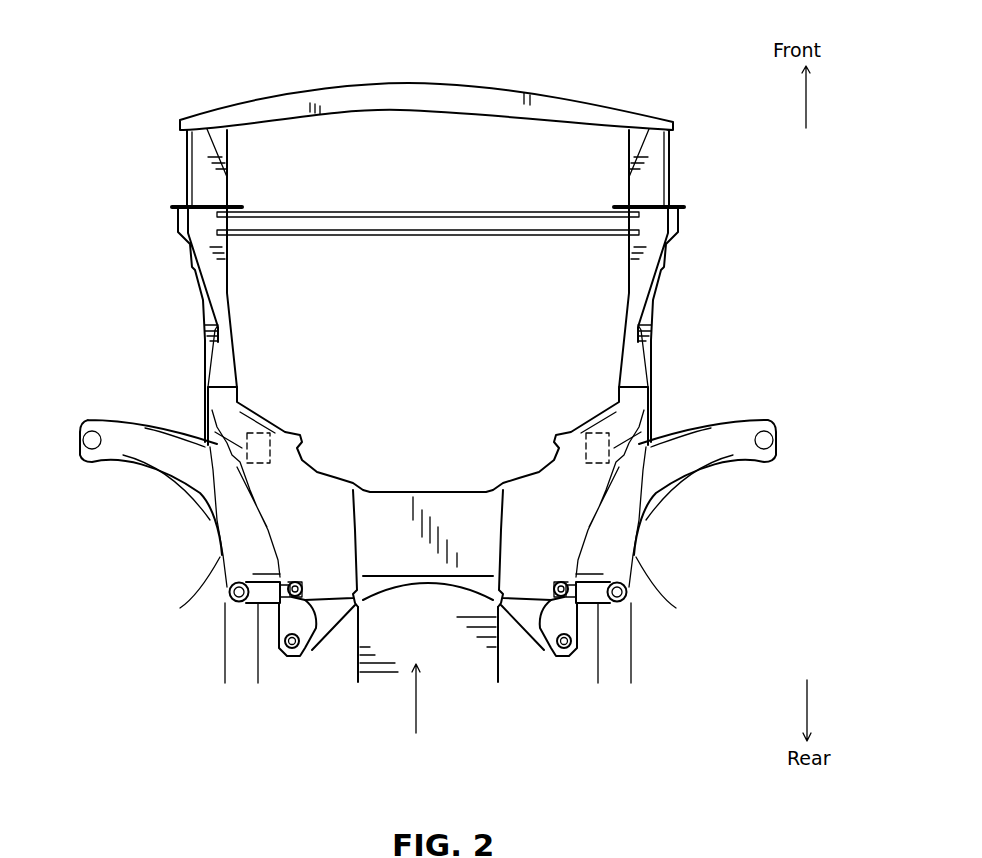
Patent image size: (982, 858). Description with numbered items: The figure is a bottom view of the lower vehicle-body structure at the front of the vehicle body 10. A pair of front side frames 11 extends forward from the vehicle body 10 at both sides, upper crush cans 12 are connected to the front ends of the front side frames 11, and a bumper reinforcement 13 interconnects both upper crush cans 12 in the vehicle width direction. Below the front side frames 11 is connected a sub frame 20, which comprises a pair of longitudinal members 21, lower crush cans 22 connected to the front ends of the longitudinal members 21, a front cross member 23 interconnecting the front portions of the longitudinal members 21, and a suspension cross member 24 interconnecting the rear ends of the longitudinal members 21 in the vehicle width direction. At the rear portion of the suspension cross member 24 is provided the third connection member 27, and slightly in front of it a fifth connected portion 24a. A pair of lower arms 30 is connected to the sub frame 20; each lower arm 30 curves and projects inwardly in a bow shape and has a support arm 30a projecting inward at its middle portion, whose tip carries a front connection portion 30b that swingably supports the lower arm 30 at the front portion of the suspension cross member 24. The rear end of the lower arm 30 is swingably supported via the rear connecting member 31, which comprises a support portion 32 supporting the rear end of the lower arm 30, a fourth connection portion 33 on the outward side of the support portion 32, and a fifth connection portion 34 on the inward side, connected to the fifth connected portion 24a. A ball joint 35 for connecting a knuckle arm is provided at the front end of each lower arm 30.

The vehicle body 10 is at (428, 684).
The front side frame 11 is at (180, 264).
The upper crush can 12 is at (185, 150).
The bumper reinforcement 13 is at (610, 113).
The sub frame 20 is at (244, 342).
The longitudinal member 21 is at (213, 293).
The lower crush can 22 is at (193, 165).
The front cross member 23 is at (420, 223).
The suspension cross member 24 is at (395, 503).
The fifth connected portion 24a is at (308, 620).
The third connection member 27 is at (293, 657).
The lower arm 30 is at (176, 503).
The support arm 30a is at (215, 432).
The front connection portion 30b is at (258, 447).
The rear connecting member 31 is at (211, 590).
The support portion 32 is at (260, 597).
The fourth connection portion 33 is at (236, 602).
The fifth connection portion 34 is at (290, 598).
The ball joint 35 is at (86, 432).